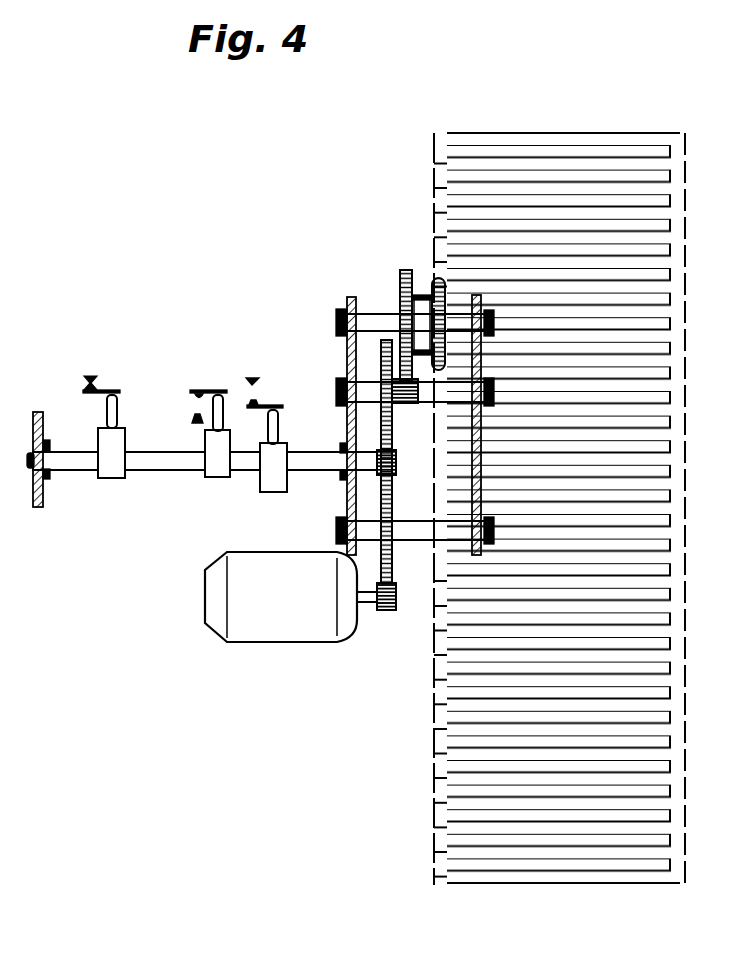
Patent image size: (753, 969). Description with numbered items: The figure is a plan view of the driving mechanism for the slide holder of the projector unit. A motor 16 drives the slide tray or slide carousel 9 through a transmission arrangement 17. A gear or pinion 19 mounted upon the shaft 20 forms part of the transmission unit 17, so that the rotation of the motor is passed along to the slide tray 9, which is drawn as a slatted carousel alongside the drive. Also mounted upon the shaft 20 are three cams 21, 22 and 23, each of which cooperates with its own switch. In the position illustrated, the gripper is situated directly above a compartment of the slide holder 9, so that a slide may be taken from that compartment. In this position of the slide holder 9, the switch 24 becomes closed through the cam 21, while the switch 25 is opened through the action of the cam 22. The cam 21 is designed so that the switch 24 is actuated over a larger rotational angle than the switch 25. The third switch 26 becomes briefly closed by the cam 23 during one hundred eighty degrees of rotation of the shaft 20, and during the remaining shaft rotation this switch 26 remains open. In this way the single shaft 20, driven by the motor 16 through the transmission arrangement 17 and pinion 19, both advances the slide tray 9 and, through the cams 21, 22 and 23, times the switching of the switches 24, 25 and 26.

The slide tray 9 is at (437, 783).
The motor 16 is at (262, 625).
The transmission arrangement 17 is at (376, 292).
The gear 19 is at (396, 462).
The shaft 20 is at (70, 470).
The cam 21 is at (112, 478).
The cam 22 is at (215, 478).
The cam 23 is at (272, 492).
The switch 24 is at (108, 392).
The switch 25 is at (207, 390).
The switch 26 is at (275, 405).